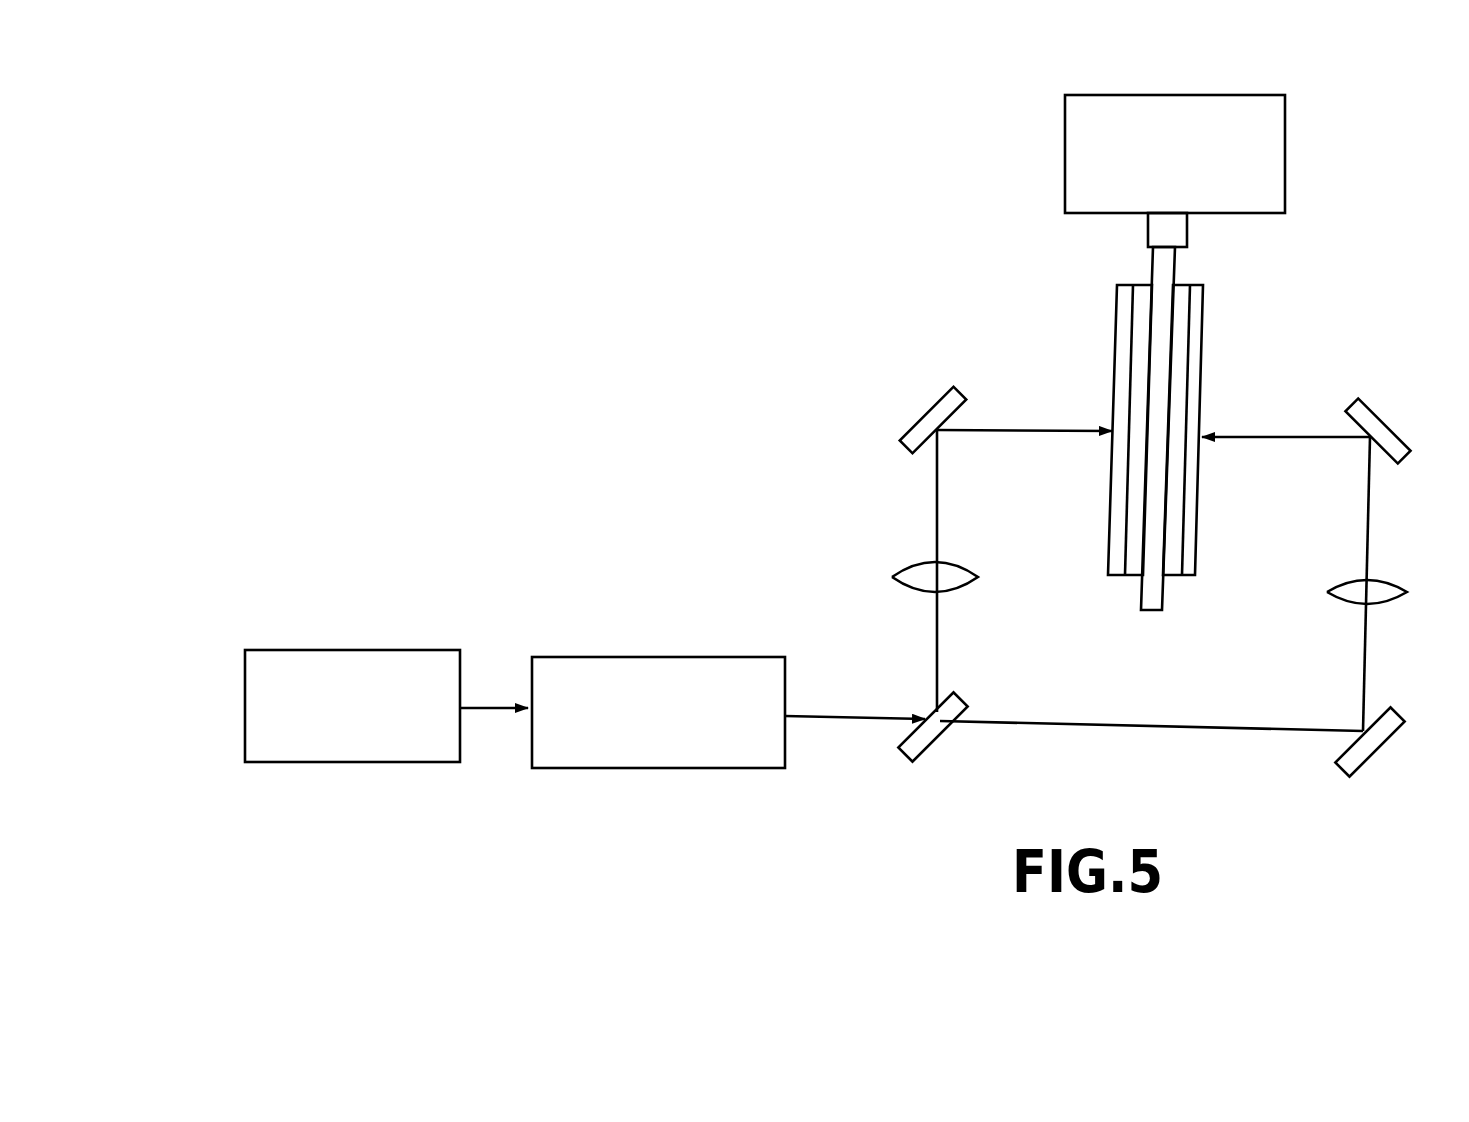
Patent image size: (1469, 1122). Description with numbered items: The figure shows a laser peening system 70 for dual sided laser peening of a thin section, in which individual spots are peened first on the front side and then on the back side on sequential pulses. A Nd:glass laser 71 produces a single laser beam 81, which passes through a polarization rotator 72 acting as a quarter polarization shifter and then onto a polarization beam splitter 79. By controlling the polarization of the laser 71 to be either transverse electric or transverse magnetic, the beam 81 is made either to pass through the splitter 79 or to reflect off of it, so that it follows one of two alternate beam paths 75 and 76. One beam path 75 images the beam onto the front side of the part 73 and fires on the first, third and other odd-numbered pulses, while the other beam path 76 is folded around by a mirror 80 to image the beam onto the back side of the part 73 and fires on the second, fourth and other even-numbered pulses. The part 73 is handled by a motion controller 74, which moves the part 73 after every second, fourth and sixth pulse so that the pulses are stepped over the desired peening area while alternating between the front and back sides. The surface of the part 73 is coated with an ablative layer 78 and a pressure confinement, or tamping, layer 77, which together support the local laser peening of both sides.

The laser machining system 70 is at (826, 270).
The Nd:glass laser 71 is at (385, 650).
The polarization rotator 72 is at (680, 657).
The part 73 is at (1178, 268).
The motion controller 74 is at (1285, 177).
The beam path to front side 75 is at (1050, 433).
The beam path to back side 76 is at (1297, 440).
The pressure confinement (tamping) layer 77 is at (1113, 402).
The ablative layer 78 is at (1143, 350).
The polarization beam splitter 79 is at (933, 745).
The mirror 80 is at (1378, 748).
The laser beam 81 is at (496, 705).